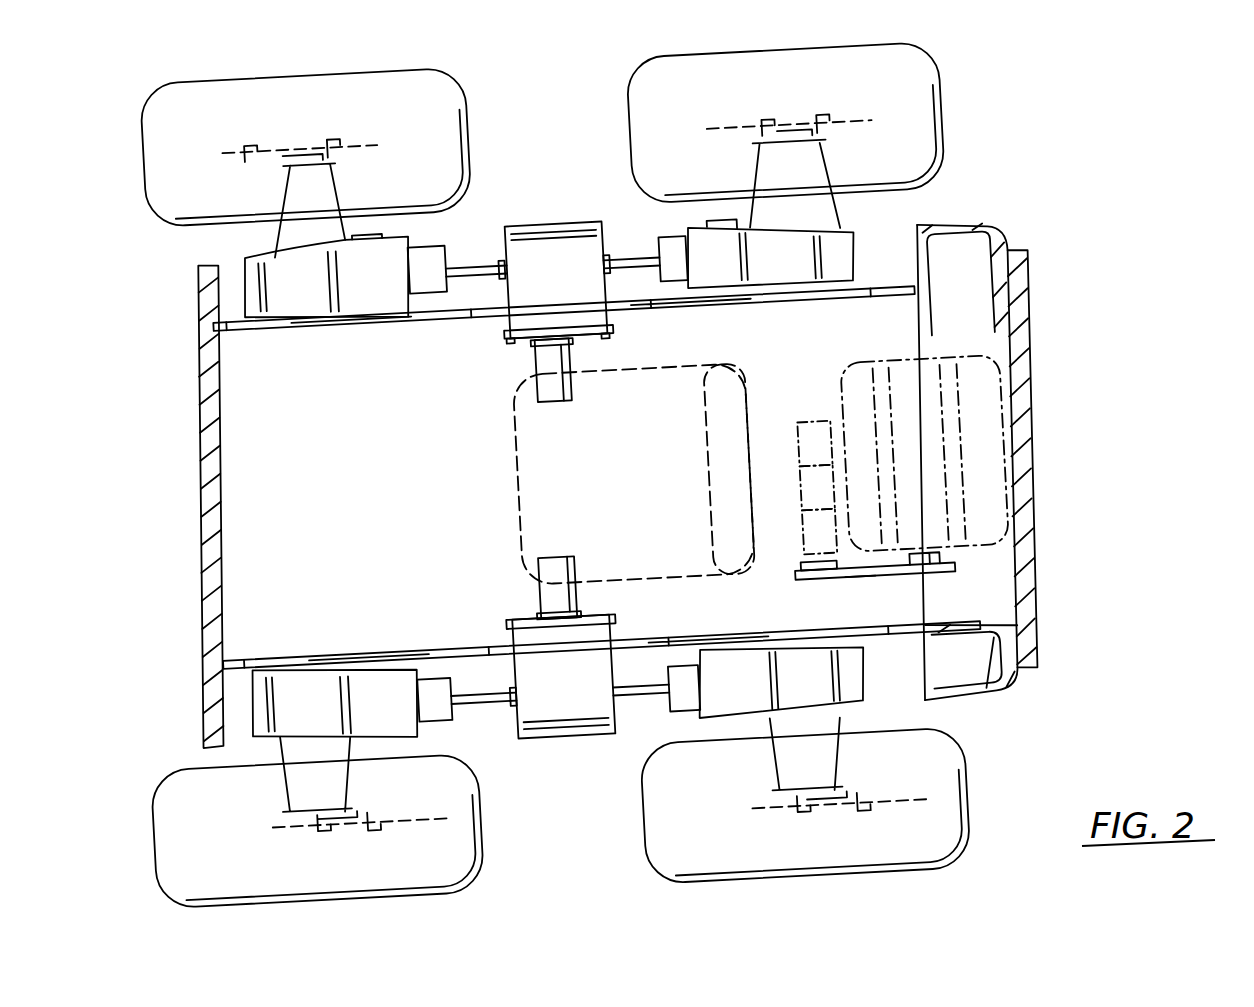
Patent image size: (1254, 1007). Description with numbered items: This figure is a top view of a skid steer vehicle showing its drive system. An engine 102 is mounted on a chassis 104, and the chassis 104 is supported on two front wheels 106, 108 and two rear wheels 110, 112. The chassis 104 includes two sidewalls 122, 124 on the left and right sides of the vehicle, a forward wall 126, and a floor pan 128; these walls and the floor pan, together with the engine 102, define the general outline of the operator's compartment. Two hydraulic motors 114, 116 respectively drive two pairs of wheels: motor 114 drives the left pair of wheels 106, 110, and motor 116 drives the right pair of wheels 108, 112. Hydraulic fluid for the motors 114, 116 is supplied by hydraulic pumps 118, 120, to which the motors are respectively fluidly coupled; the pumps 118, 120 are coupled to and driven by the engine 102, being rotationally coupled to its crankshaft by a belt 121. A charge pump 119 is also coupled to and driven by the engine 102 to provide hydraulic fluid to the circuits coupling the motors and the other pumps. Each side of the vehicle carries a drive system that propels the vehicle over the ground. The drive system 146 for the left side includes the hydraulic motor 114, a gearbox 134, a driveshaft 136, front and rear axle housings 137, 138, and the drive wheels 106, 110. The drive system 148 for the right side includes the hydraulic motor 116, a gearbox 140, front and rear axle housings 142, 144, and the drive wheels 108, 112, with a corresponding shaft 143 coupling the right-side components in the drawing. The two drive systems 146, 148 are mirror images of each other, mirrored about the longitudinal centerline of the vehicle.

The engine 102 is at (1037, 365).
The chassis 104 is at (451, 496).
The front wheel 106 is at (271, 869).
The front wheel 108 is at (246, 180).
The rear wheel 110 is at (752, 867).
The rear wheel 112 is at (849, 98).
The hydraulic motor 114 is at (574, 601).
The hydraulic motor 116 is at (577, 355).
The hydraulic pump 118 is at (819, 488).
The charge pump 119 is at (817, 444).
The hydraulic pump 120 is at (819, 532).
The belt 121 is at (839, 603).
The sidewall 122 is at (371, 640).
The sidewall 124 is at (412, 315).
The forward wall 126 is at (226, 468).
The floor pan 128 is at (358, 491).
The gearbox 134 is at (552, 702).
The driveshaft 136 is at (469, 695).
The front axle housing 137 is at (299, 691).
The rear axle housing 138 is at (793, 691).
The gearbox 140 is at (602, 289).
The front axle housing 142 is at (319, 281).
The coupling 143 is at (473, 258).
The rear axle housing 144 is at (807, 282).
The drive system 146 is at (572, 786).
The drive system 148 is at (613, 170).